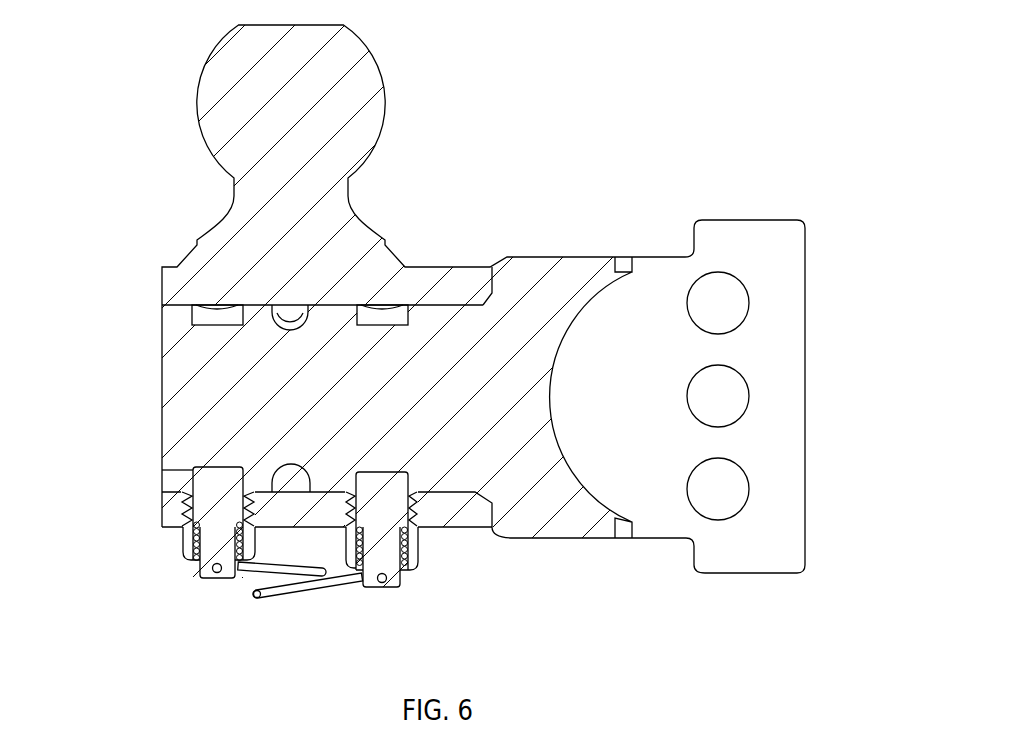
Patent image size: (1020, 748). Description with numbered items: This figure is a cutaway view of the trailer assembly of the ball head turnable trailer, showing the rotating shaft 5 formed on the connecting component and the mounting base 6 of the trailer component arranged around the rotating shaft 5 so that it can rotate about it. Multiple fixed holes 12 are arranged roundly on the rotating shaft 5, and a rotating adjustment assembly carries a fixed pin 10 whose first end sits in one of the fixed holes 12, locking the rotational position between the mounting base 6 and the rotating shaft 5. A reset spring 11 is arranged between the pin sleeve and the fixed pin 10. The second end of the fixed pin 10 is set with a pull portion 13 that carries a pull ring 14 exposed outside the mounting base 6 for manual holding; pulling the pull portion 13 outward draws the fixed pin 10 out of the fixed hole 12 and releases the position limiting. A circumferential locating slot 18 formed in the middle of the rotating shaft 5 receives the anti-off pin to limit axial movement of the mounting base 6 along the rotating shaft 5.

The rotating shaft 5 is at (173, 377).
The mounting base 6 is at (572, 270).
The fixed pin 10 is at (217, 513).
The reset spring 11 is at (192, 552).
The fixed hole 12 is at (396, 312).
The pull portion 13 is at (198, 572).
The pull ring 14 is at (257, 575).
The locating slot 18 is at (290, 312).